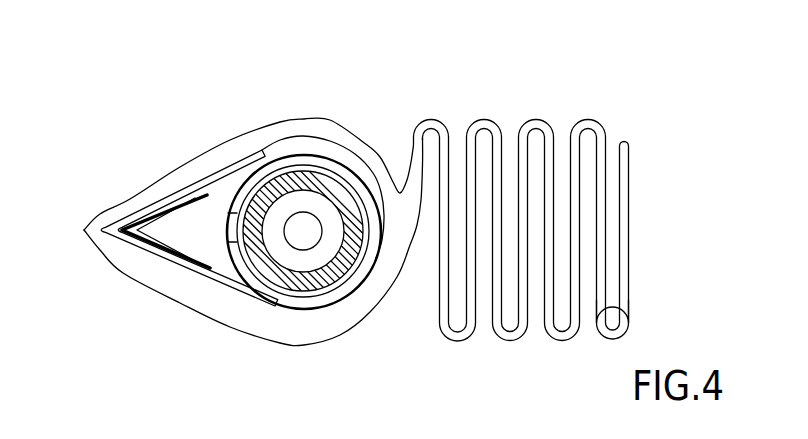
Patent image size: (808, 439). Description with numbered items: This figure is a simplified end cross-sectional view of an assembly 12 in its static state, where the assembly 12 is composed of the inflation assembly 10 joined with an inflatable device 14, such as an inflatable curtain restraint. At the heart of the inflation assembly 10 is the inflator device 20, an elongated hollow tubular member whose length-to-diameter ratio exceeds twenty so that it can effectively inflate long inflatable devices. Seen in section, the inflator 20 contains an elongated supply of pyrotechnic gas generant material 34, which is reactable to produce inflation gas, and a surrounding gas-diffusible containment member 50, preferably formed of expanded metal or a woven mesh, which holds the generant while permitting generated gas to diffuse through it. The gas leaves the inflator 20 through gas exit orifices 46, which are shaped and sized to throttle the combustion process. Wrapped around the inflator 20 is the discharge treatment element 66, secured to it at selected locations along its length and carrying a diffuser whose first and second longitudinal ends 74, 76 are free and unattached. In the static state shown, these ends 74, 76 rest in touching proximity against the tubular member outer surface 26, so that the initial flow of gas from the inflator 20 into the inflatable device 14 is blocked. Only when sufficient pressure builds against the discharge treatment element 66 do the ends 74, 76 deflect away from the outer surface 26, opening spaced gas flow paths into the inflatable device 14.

The inflation assembly 10 is at (182, 180).
The assembly 12 is at (643, 118).
The inflatable device 14 is at (545, 343).
The inflator device 20 is at (346, 140).
The outer surface 26 is at (352, 294).
The pyrotechnic gas generant material 34 is at (310, 270).
The gas exit orifices 46 is at (183, 247).
The containment member 50 is at (317, 284).
The discharge treatment element 66 is at (130, 187).
The first longitudinal end 74 is at (237, 287).
The second longitudinal end 76 is at (261, 149).